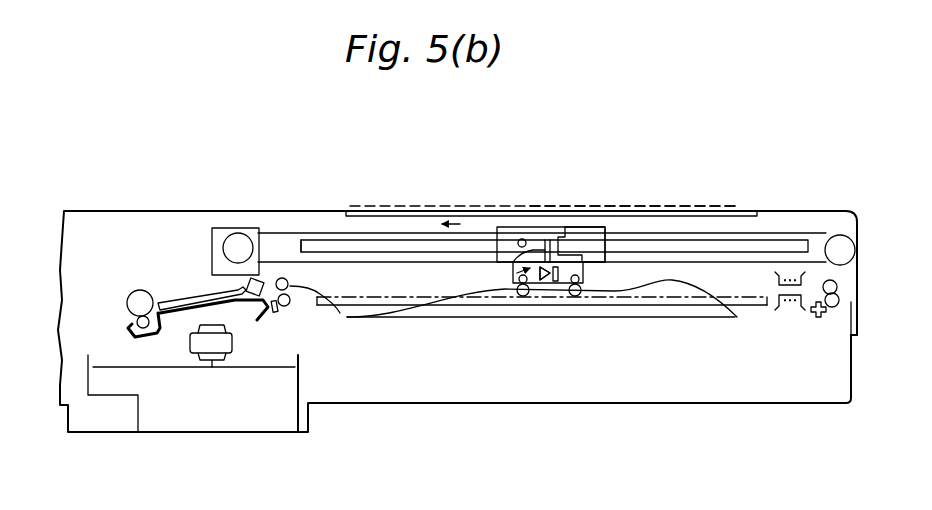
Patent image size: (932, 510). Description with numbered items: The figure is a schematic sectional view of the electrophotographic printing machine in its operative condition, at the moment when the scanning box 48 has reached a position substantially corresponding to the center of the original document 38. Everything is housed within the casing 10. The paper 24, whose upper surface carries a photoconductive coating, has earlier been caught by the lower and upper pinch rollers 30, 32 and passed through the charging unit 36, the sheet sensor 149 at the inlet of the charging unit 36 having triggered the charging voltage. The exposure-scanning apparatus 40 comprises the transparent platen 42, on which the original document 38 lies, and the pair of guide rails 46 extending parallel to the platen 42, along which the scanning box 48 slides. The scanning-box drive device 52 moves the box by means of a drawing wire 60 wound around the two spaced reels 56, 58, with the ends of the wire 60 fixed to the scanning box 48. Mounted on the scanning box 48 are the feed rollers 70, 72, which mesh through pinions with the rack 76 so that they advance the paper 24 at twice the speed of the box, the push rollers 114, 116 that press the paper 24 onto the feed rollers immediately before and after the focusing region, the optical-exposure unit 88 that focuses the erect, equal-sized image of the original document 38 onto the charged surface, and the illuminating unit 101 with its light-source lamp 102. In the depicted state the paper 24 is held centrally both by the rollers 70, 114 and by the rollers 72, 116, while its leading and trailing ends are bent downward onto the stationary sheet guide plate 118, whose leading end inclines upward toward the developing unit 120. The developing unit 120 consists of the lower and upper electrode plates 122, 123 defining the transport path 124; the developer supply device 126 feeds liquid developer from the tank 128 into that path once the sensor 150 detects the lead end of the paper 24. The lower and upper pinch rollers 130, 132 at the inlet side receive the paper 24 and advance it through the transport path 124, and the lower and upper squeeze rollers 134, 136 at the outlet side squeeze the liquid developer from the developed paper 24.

The casing 10 is at (814, 206).
The paper 24 is at (698, 330).
The lower pinch roller 30 is at (836, 307).
The upper pinch roller 32 is at (838, 286).
The charging unit 36 is at (789, 316).
The original document 38 is at (572, 203).
The exposure-scanning apparatus 40 is at (594, 225).
The transparent platen 42 is at (695, 212).
The guide rails 46 is at (762, 243).
The scanning box 48 is at (597, 243).
The scanning-box drive device 52 is at (243, 227).
The reel 56 is at (233, 246).
The reel 58 is at (842, 248).
The drawing wire 60 is at (278, 232).
The feed roller 70 is at (576, 297).
The feed roller 72 is at (539, 287).
The rack 76 is at (398, 292).
The optical-exposure unit 88 is at (517, 285).
The illuminating unit 101 is at (524, 239).
The light-source lamp 102 is at (520, 226).
The push roller 114 is at (585, 284).
The push roller 116 is at (526, 297).
The stationary sheet guide plate 118 is at (447, 316).
The developing unit 120 is at (188, 294).
The lower electrode plate 122 is at (177, 312).
The upper electrode plate 123 is at (177, 298).
The transport path 124 is at (240, 305).
The developer supply device 126 is at (262, 282).
The tank 128 is at (227, 415).
The lower pinch roller 130 is at (289, 291).
The upper pinch roller 132 is at (340, 318).
The lower squeeze roller 134 is at (138, 335).
The upper squeeze roller 136 is at (133, 295).
The sheet sensor 149 is at (817, 319).
The sensor 150 is at (276, 313).